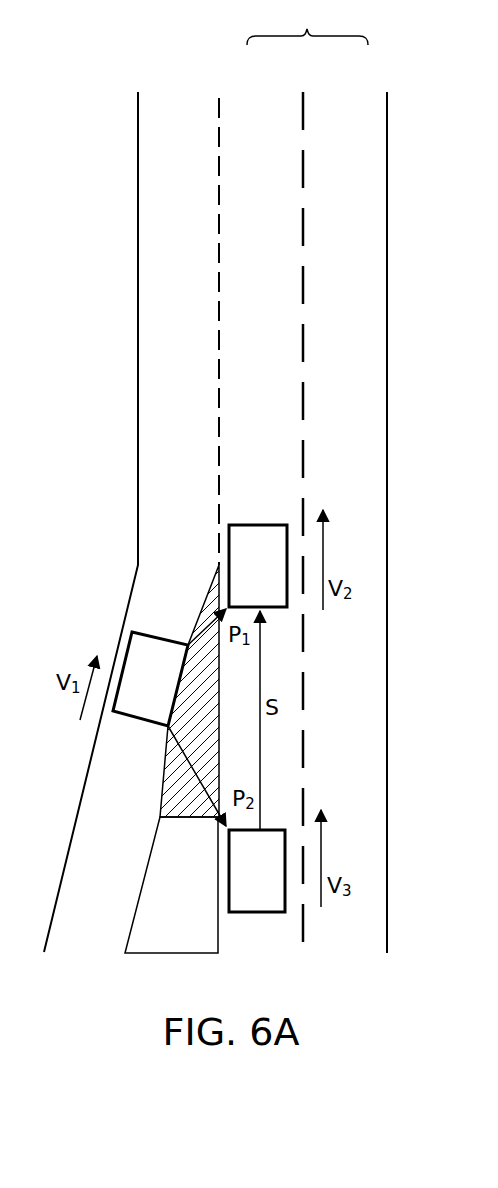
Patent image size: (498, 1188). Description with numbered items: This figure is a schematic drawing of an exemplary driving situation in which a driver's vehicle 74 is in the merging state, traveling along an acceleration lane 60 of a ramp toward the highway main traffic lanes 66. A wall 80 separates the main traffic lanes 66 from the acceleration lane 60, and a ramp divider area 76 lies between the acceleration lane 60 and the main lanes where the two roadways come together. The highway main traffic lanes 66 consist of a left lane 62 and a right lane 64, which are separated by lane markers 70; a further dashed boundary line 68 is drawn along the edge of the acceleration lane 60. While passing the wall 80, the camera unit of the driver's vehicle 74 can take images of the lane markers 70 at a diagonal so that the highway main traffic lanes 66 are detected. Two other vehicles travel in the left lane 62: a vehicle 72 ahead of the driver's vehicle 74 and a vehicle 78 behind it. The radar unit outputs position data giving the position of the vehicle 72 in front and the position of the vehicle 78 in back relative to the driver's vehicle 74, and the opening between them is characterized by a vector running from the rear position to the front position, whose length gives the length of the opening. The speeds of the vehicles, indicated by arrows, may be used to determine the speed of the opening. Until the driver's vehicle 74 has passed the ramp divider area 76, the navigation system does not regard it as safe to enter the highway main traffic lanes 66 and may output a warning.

The acceleration lane 60 is at (176, 100).
The left lane 62 is at (266, 100).
The right lane 64 is at (349, 100).
The highway main traffic lanes 66 is at (307, 23).
The lane marking 68 is at (218, 277).
The lane markers 70 is at (303, 291).
The vehicle 72 is at (258, 566).
The driver's vehicle 74 is at (150, 679).
The ramp divider area 76 is at (160, 788).
The vehicle 78 is at (257, 871).
The wall 80 is at (171, 885).